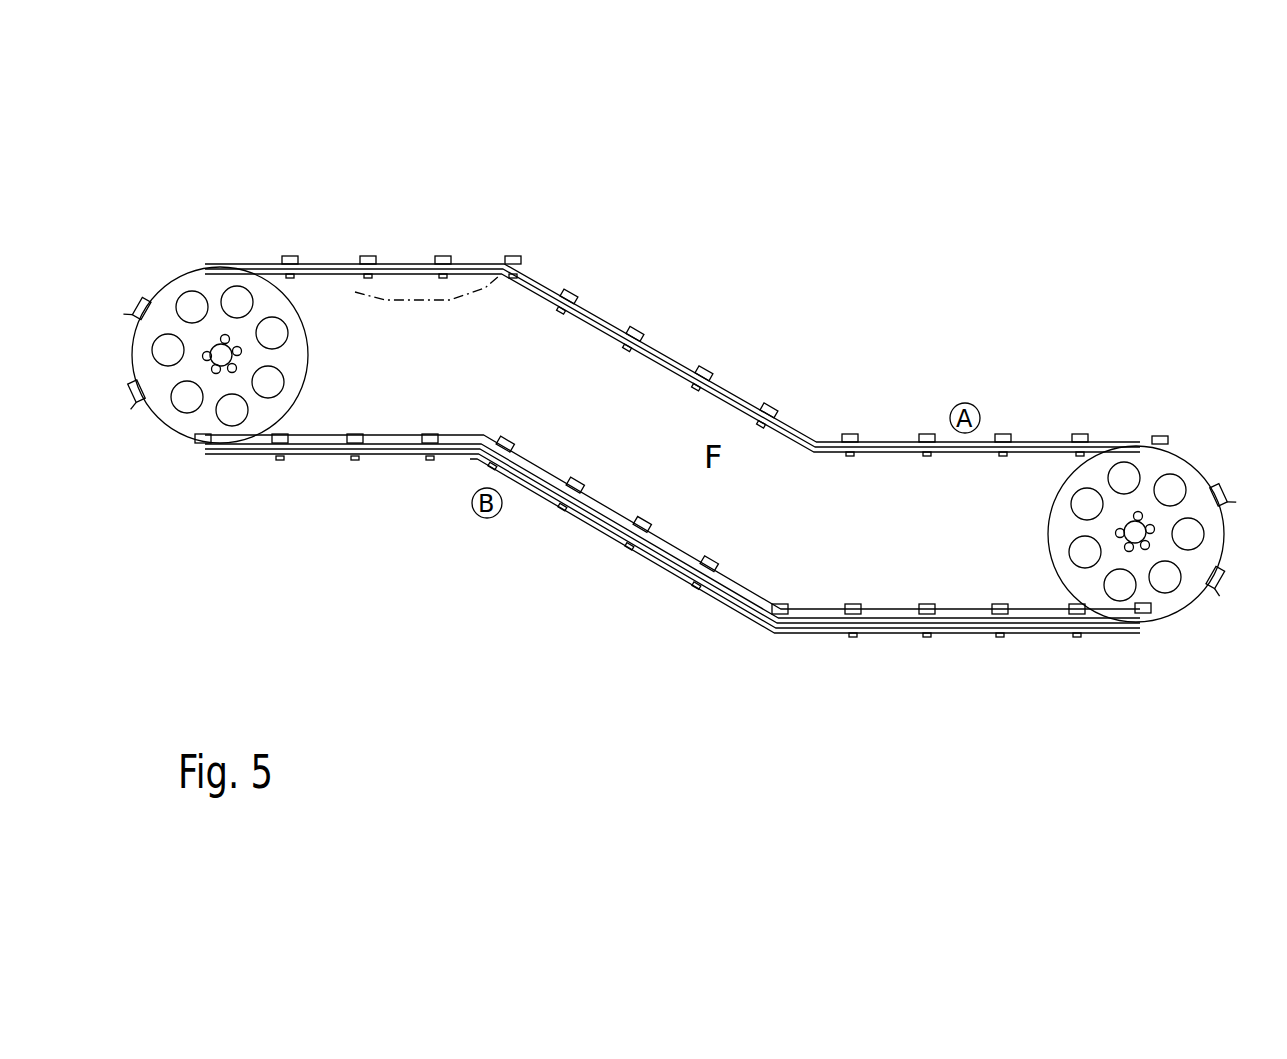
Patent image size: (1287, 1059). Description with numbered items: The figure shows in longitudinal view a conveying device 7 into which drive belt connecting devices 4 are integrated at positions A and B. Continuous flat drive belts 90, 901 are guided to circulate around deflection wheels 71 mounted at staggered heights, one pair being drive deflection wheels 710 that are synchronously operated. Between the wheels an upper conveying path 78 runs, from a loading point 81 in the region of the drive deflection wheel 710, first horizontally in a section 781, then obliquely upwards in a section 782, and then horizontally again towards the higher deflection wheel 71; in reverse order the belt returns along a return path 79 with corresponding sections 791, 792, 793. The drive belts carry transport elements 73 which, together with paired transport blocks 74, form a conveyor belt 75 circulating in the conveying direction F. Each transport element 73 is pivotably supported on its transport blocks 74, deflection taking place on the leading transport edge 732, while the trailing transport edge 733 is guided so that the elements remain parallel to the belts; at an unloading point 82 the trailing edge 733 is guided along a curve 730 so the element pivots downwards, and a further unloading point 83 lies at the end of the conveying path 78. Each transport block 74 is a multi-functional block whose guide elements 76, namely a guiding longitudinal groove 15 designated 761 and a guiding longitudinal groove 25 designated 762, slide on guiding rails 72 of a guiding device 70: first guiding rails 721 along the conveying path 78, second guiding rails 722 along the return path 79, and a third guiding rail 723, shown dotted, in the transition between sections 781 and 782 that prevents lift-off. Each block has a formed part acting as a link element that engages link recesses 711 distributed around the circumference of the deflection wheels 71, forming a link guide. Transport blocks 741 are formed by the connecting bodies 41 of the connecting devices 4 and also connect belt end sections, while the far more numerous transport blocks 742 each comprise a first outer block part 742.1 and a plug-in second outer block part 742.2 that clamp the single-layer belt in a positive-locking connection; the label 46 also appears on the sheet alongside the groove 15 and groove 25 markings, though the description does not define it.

The conveying device 7 is at (868, 224).
The guiding device 70 is at (672, 448).
The deflection wheels 71 is at (180, 268).
The drive deflection wheels 710 is at (1183, 605).
The link recesses 711 is at (302, 356).
The guiding rails 72 is at (868, 456).
The first guiding rails 721 is at (888, 457).
The second guiding rails 722 is at (967, 617).
The third guiding rail 723 is at (815, 432).
The transport elements 73 is at (484, 262).
The curve 730 is at (368, 290).
The leading transport edge 732 is at (442, 257).
The trailing transport edge 733 is at (497, 282).
The transport blocks 74 is at (681, 452).
The transport blocks formed by connecting bodies 741 is at (1000, 436).
The transport blocks 742 is at (297, 259).
The first outer block part 742.1 is at (288, 258).
The second outer block part 742.2 is at (692, 590).
The conveyor belt 75 is at (753, 397).
The guide elements 76 is at (630, 401).
The guide element 761 is at (570, 293).
The guide element 762 is at (562, 481).
The conveying path 78 is at (1103, 302).
The return path 79 is at (325, 599).
The return path section 791 is at (400, 470).
The sloping return section 792 is at (580, 554).
The horizontal return section 793 is at (950, 648).
The horizontal conveying section 781 is at (935, 416).
The sloping conveying section 782 is at (684, 337).
The loading point 81 is at (1037, 336).
The unloading point 82 is at (435, 316).
The unloading point 83 is at (118, 489).
The drive belt connecting device 4 is at (668, 430).
The connecting body 41 is at (1012, 432).
The container neck 46 is at (851, 378).
The guiding longitudinal groove 15 is at (1014, 437).
The guiding longitudinal groove 25 is at (501, 450).
The continuous flat drive belts 90 is at (969, 533).
The continuous flat drive belt 901 is at (1114, 433).